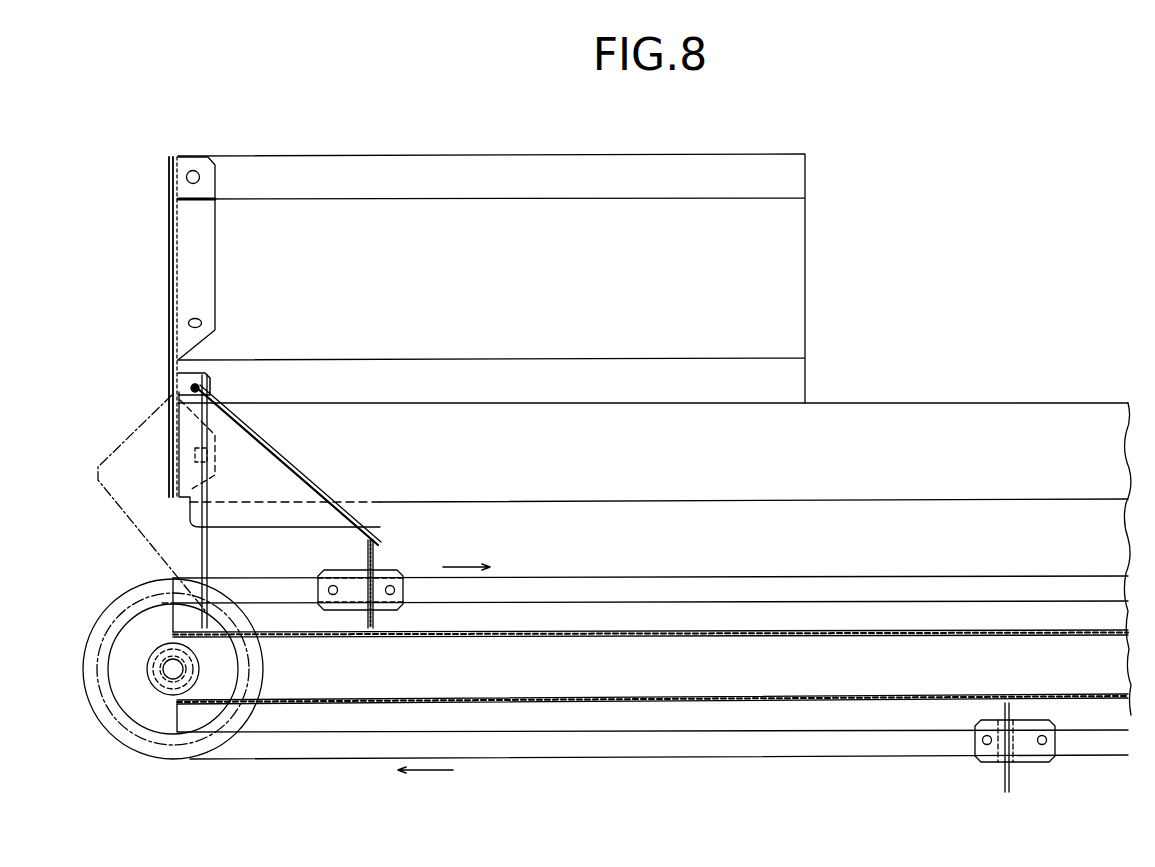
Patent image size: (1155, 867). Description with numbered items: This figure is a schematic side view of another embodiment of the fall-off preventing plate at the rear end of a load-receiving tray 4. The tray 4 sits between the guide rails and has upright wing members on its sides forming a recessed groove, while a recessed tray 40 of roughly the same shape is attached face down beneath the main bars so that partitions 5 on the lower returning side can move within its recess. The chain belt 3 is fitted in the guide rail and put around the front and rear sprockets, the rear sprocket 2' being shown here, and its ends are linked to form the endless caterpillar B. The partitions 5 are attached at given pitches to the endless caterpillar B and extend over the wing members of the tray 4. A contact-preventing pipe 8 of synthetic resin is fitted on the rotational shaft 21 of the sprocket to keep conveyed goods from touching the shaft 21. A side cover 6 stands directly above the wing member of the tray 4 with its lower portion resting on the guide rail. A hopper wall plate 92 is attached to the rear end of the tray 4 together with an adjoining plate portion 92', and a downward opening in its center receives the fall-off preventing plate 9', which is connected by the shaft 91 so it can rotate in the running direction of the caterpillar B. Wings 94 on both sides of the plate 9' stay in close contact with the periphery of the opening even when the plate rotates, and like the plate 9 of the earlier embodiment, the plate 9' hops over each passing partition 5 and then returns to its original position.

The hopper wall plate 92 is at (169, 327).
The side frame panel 92' is at (519, 278).
The fall-off preventing plate 9 is at (269, 471).
The shaft 91 is at (205, 387).
The side cover 6 is at (836, 422).
The fall-off preventing plate 9' is at (289, 465).
The wings 94 is at (140, 517).
The load-receiving tray 4 is at (303, 627).
The partitions 5 is at (382, 545).
The chain belt 3 is at (532, 578).
The endless caterpillar B is at (743, 571).
The sprocket 2' is at (155, 669).
The contact-preventing pipe 8 is at (163, 667).
The rotational shaft 21 is at (163, 673).
The recessed tray 40 is at (293, 703).